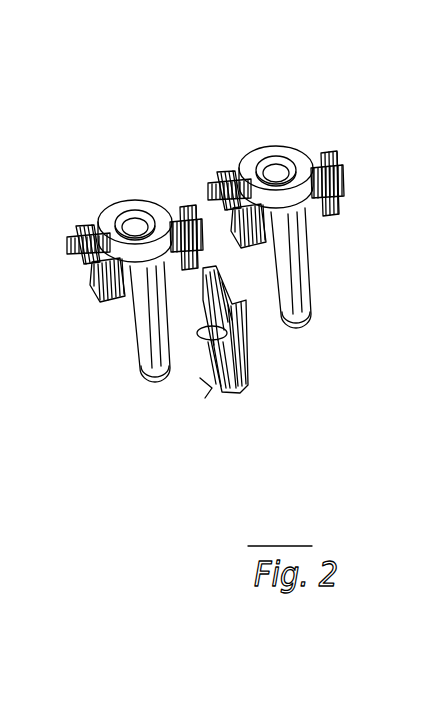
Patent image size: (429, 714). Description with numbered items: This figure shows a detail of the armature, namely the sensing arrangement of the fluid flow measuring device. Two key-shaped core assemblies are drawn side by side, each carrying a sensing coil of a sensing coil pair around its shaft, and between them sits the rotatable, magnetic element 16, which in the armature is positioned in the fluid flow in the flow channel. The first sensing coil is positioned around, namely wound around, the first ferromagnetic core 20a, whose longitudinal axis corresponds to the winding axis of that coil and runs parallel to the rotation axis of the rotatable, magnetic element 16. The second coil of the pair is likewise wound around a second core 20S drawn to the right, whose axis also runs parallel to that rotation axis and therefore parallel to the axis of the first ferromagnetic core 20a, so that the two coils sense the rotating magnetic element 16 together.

The first ferromagnetic core 20a is at (135, 366).
The key shaft of second key 20S is at (310, 303).
The rotatable, magnetic element 16 is at (217, 373).